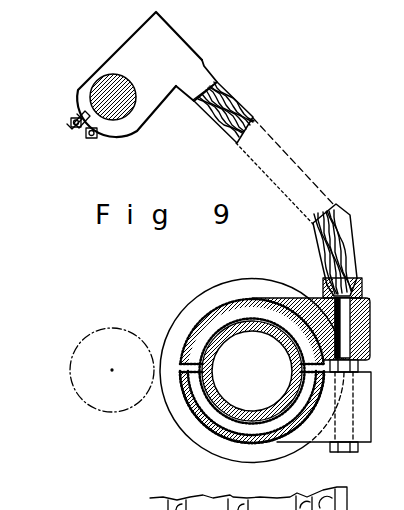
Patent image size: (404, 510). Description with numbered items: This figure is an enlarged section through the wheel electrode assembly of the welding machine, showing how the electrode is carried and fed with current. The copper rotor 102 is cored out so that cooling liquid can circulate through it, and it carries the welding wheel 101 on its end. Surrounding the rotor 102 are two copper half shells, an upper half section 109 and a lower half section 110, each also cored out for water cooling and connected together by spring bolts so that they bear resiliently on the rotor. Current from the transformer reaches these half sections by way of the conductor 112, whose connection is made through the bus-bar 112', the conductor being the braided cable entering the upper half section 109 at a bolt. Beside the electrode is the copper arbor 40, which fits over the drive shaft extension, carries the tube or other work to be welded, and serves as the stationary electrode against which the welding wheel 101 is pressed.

The copper arbor 40 is at (122, 408).
The welding wheel 101 is at (212, 288).
The copper rotor 102 is at (222, 394).
The upper half shell 109 is at (268, 299).
The lower half shell 110 is at (222, 436).
The conductor 112 is at (293, 189).
The bus-bar 112' is at (202, 231).